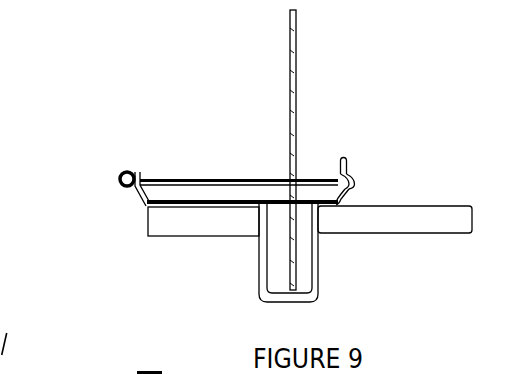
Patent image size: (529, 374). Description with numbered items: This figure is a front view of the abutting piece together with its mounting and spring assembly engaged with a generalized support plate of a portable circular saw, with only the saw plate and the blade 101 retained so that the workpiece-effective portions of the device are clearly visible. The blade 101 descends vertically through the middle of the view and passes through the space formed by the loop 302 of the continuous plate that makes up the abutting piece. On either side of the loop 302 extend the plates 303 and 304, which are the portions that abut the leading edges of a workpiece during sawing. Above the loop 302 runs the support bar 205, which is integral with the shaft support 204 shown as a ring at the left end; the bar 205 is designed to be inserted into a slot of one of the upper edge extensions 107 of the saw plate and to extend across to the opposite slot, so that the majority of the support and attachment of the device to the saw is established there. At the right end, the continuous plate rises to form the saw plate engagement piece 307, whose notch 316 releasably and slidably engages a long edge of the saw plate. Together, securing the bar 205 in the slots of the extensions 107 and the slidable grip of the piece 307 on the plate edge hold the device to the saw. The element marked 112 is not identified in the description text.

The saw blade 101 is at (290, 118).
The upper edge extensions 107 is at (202, 157).
The lower flange 112 is at (185, 197).
The shaft support 204 is at (117, 172).
The support bar 205 is at (232, 178).
The loop 302 is at (263, 298).
The plate 303 is at (226, 226).
The plate 304 is at (360, 223).
The saw plate engagement piece 307 is at (348, 162).
The notch 316 is at (357, 180).